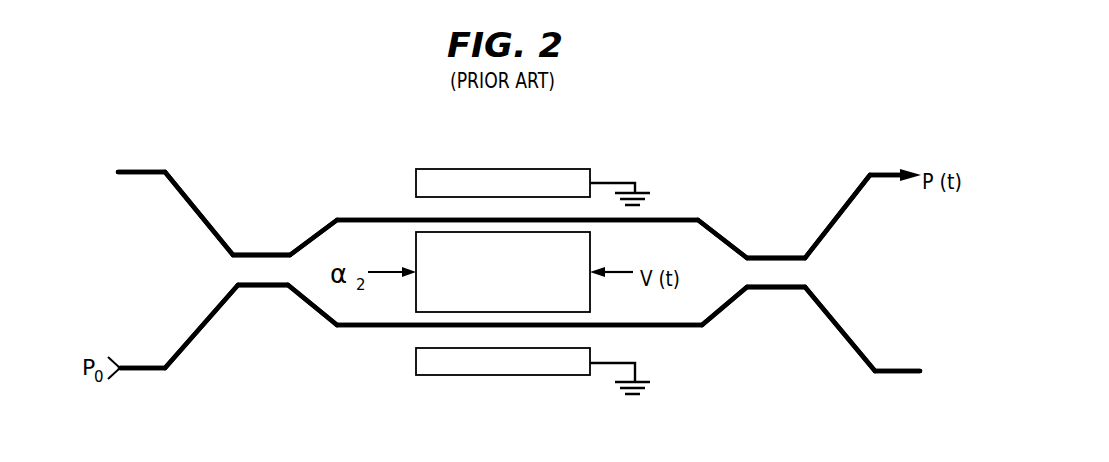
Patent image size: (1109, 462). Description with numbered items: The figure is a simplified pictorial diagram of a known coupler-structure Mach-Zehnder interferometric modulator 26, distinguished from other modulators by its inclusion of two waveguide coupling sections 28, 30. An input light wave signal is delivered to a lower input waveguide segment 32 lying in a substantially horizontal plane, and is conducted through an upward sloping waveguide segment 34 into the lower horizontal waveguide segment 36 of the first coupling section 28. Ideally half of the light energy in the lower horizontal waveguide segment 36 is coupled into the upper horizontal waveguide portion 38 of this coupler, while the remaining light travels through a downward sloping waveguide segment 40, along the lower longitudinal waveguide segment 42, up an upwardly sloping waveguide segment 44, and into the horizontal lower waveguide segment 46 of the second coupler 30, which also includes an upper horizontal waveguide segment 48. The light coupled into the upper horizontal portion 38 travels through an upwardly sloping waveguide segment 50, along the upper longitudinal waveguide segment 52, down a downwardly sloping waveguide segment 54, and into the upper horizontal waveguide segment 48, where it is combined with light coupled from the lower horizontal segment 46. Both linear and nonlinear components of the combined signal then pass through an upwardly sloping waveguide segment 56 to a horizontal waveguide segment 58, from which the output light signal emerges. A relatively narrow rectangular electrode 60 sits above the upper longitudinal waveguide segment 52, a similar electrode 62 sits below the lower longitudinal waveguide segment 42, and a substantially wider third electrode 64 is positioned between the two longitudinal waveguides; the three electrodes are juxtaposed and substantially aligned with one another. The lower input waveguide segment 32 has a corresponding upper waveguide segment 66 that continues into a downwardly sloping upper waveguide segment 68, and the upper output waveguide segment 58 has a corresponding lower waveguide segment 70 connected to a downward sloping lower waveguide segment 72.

The Mach-Zehnder interferometric modulator 26 is at (624, 129).
The coupling section 28 is at (297, 324).
The second coupler 30 is at (740, 327).
The lower input waveguide segment 32 is at (140, 368).
The upward sloping waveguide segment 34 is at (197, 326).
The lower horizontal waveguide segment 36 is at (256, 287).
The upper horizontal waveguide portion 38 is at (258, 255).
The downward sloping waveguide segment 40 is at (304, 304).
The lower longitudinal waveguide segment 42 is at (662, 327).
The upwardly sloping waveguide segment 44 is at (735, 305).
The horizontal lower waveguide segment 46 is at (782, 290).
The upper horizontal waveguide segment 48 is at (782, 256).
The upwardly sloping waveguide segment 50 is at (313, 235).
The upper longitudinal waveguide segment 52 is at (676, 218).
The downwardly sloping waveguide segment 54 is at (727, 237).
The upwardly sloping waveguide segment 56 is at (848, 200).
The horizontal waveguide segment 58 is at (890, 172).
The rectangular electrode 60 is at (425, 169).
The electrode 62 is at (428, 375).
The third electrode 64 is at (592, 246).
The upper waveguide segment 66 is at (146, 170).
The downwardly sloping upper waveguide segment 68 is at (192, 190).
The lower waveguide segment 70 is at (897, 370).
The downward sloping lower waveguide segment 72 is at (842, 327).